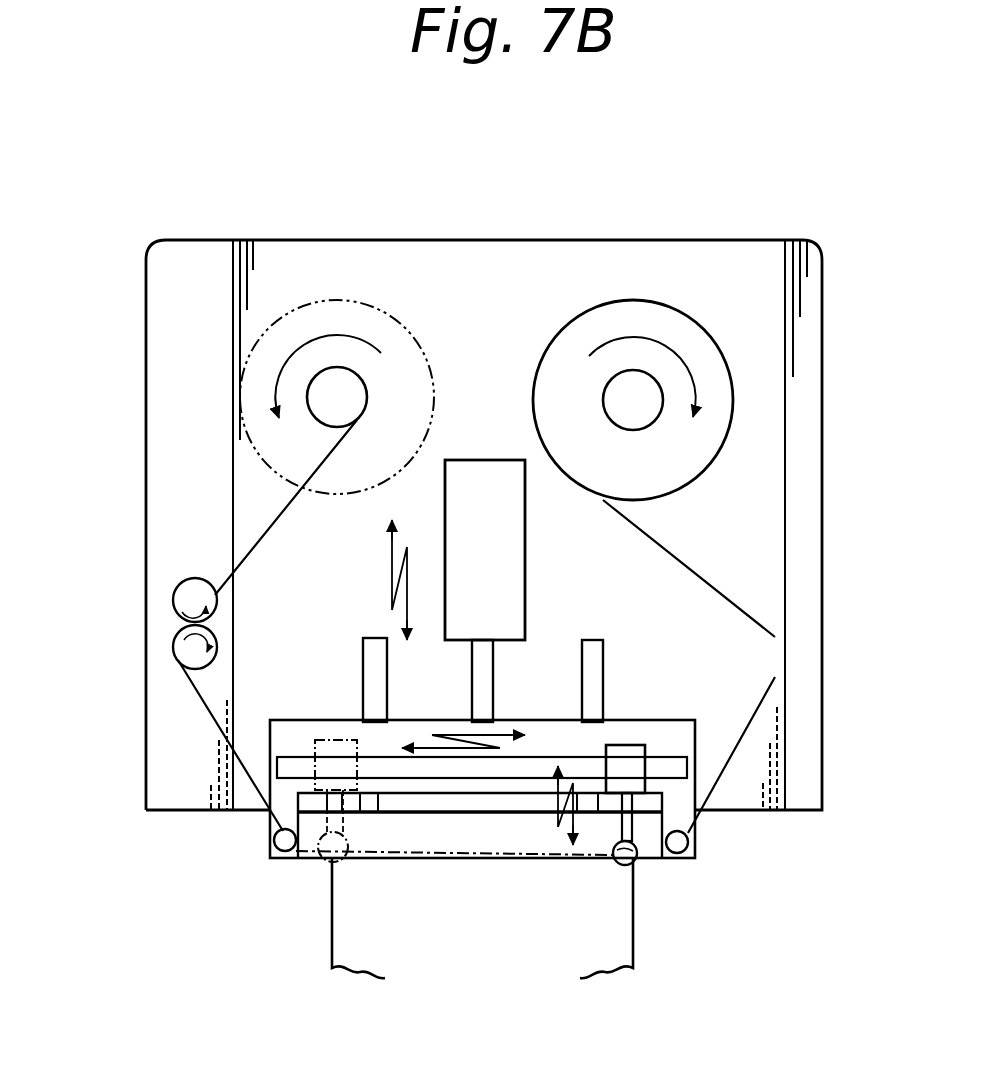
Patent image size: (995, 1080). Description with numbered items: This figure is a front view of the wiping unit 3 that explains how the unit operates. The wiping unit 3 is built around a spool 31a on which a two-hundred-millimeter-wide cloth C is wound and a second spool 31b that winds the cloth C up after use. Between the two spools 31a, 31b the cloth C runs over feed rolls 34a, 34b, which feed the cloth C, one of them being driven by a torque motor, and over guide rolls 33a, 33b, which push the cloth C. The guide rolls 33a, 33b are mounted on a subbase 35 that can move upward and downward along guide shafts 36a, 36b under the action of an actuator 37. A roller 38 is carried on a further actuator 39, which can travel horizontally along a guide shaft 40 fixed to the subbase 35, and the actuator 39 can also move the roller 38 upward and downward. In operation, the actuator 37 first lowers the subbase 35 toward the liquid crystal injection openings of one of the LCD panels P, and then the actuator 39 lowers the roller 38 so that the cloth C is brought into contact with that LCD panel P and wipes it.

The wiping unit 3 is at (676, 229).
The spool 31a is at (657, 427).
The spool 31b is at (363, 377).
The guide roll 33a is at (682, 865).
The guide roll 33b is at (285, 852).
The feed roll 34a is at (175, 645).
The feed roll 34b is at (187, 580).
The subbase 35 is at (537, 722).
The guide shaft 36a is at (594, 640).
The guide shaft 36b is at (373, 638).
The actuator 37 is at (483, 460).
The roller 38 is at (637, 865).
The actuator 39 is at (625, 745).
The guide shaft 40 is at (318, 742).
The cloth C is at (685, 560).
The LCD panel P is at (332, 922).